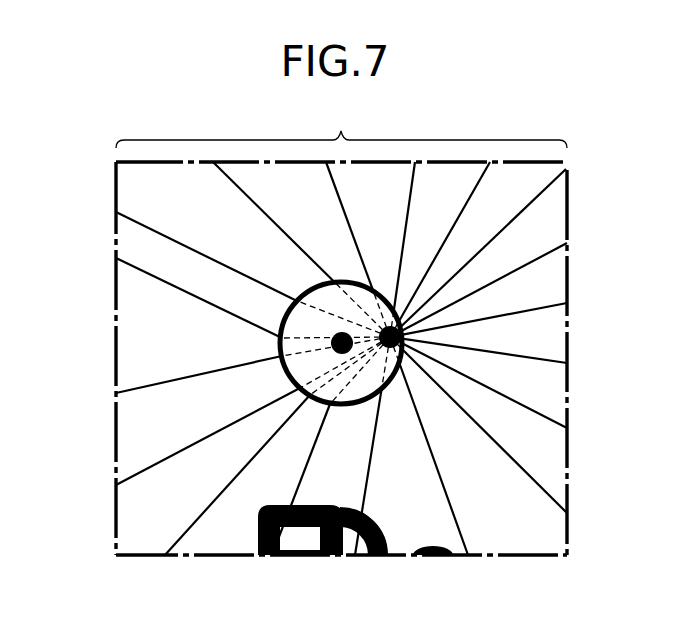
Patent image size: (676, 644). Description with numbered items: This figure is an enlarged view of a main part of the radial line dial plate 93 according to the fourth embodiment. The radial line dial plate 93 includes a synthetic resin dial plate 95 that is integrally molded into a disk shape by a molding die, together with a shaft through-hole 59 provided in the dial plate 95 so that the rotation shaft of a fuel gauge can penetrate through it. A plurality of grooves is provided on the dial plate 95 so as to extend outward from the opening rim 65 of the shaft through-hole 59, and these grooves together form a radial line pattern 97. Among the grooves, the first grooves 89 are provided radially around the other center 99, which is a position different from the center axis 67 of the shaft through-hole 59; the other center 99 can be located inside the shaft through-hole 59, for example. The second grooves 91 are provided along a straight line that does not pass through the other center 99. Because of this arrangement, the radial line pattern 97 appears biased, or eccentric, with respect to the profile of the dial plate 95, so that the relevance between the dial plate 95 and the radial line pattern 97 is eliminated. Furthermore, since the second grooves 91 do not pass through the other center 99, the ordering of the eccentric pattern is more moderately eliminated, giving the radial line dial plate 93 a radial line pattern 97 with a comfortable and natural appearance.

The shaft through-hole 59 is at (304, 380).
The opening rim 65 is at (383, 327).
The center axis 67 is at (336, 339).
The first grooves 89 is at (267, 216).
The second grooves 91 is at (178, 291).
The radial line dial plate 93 is at (114, 179).
The dial plate 95 is at (519, 535).
The radial line pattern 97 is at (341, 127).
The other center 99 is at (388, 403).